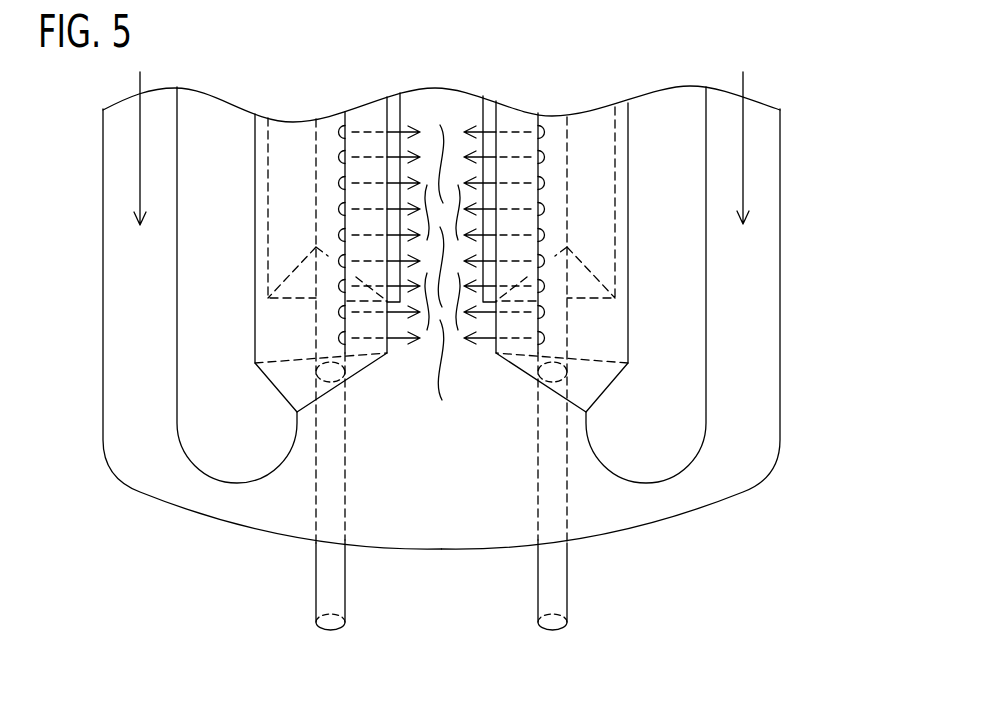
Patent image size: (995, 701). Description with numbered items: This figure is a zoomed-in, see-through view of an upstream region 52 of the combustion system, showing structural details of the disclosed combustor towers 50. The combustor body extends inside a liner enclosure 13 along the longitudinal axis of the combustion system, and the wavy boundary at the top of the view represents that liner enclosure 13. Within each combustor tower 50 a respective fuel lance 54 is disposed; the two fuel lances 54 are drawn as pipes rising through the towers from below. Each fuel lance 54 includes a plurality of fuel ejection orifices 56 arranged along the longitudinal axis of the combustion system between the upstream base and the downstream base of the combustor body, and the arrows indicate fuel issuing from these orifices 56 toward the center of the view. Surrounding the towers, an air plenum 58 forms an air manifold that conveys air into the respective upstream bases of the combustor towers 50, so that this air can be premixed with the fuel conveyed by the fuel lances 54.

The liner enclosure 13 is at (180, 118).
The combustor tower 50 is at (255, 256).
The upstream region 52 is at (813, 382).
The fuel lance 54 is at (316, 583).
The fuel ejection orifices 56 is at (338, 183).
The air plenum 58 is at (133, 427).